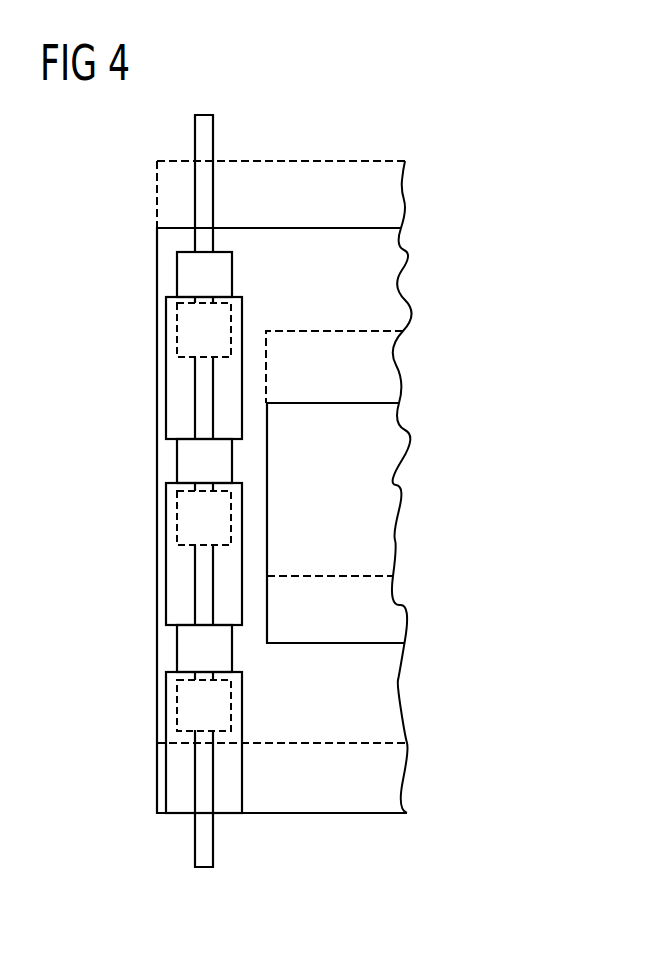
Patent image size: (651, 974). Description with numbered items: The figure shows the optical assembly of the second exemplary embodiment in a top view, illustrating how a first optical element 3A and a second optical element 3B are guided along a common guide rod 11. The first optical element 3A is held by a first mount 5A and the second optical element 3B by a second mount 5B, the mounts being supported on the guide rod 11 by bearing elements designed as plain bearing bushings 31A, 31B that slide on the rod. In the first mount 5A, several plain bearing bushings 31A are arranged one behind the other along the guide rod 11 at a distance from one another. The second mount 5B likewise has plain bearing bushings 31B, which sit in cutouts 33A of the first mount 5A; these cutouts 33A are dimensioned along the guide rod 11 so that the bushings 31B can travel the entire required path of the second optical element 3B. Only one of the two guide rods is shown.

The guide rod 11 is at (213, 132).
The second mount 5B is at (390, 196).
The first mount 5A is at (390, 279).
The second optical element 3B is at (390, 366).
The first optical element 3A is at (390, 459).
The plain bearing bushings 31A is at (172, 273).
The plain bearing bushings 31B is at (172, 330).
The cutouts 33A is at (166, 387).